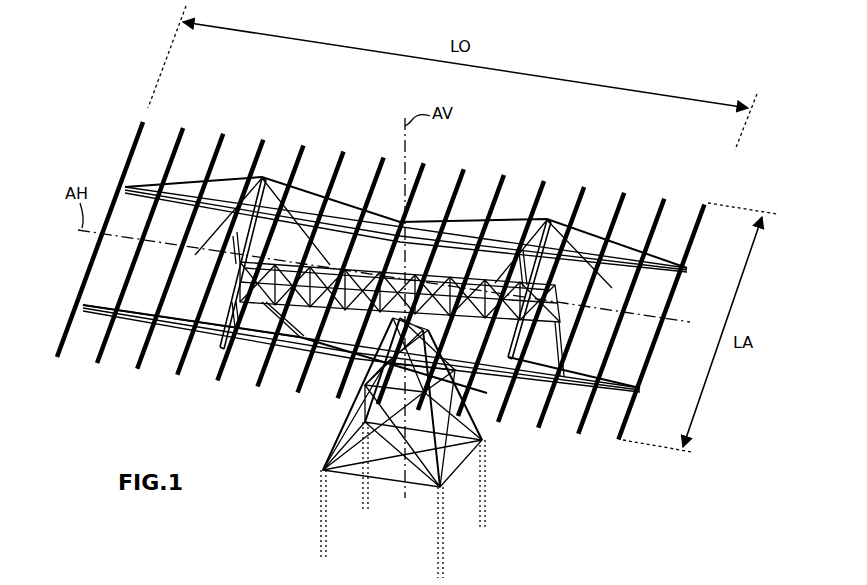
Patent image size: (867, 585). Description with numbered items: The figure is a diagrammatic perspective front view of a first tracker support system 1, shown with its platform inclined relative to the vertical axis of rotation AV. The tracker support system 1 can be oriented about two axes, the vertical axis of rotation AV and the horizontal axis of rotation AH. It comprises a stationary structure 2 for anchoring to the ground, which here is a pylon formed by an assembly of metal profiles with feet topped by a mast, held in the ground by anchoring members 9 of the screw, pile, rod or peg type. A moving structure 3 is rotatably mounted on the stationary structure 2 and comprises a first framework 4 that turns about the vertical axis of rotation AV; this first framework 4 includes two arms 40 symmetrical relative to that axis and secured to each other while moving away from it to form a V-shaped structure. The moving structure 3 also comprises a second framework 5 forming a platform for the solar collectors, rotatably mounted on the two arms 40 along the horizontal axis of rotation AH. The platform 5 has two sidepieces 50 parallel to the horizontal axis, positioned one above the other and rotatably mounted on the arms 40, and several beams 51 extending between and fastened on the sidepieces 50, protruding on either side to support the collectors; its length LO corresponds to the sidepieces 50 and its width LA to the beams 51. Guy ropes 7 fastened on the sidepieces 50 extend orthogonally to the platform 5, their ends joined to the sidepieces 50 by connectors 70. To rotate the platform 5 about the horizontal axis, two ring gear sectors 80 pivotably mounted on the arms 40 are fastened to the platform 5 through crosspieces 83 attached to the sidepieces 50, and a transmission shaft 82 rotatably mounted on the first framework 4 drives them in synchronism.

The tracker support system 1 is at (668, 520).
The stationary structure 2 is at (299, 455).
The moving structure 3 is at (110, 121).
The first framework 4 is at (418, 262).
The second framework 5 is at (675, 320).
The guy ropes 7 is at (263, 182).
The anchoring members 9 is at (363, 470).
The arms 40 is at (338, 240).
The sidepieces 50 is at (173, 178).
The beams 51 is at (230, 142).
The connectors 70 is at (315, 197).
The ring gear sectors 80 is at (555, 322).
The transmission shaft 82 is at (300, 317).
The crosspieces 83 is at (228, 295).